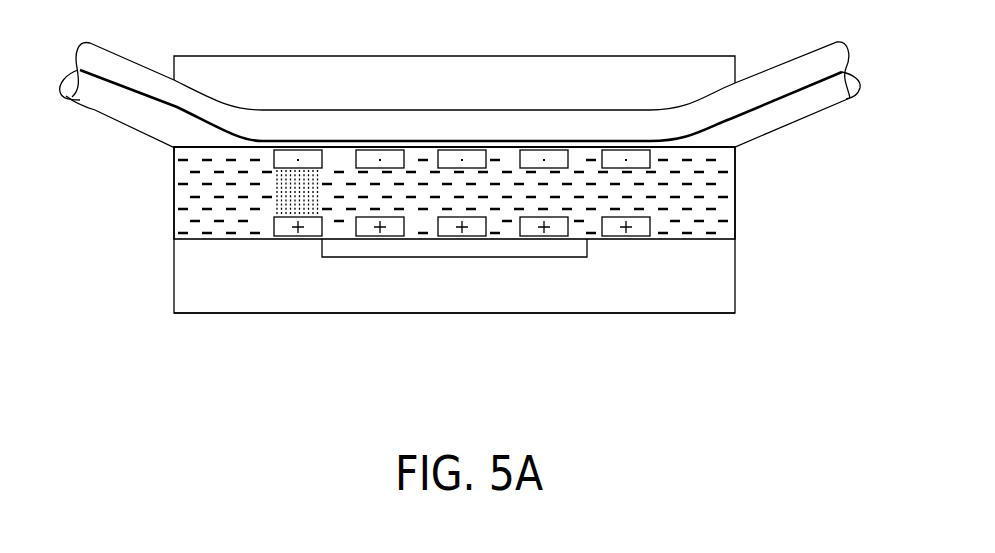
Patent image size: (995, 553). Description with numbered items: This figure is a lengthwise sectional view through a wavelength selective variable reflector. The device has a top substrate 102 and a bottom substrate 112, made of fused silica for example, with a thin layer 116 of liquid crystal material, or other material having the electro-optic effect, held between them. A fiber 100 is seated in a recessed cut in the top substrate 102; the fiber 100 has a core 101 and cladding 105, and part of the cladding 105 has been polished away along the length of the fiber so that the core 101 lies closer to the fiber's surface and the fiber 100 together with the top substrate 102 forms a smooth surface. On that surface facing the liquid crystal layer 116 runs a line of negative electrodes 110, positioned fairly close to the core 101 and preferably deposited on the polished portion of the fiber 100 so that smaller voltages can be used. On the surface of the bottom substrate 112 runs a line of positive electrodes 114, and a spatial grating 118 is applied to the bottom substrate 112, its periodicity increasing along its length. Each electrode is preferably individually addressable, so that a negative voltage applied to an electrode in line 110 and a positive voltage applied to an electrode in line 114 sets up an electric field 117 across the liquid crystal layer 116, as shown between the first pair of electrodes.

The fiber 100 is at (828, 105).
The core 101 is at (783, 95).
The top substrate 102 is at (282, 312).
The cladding 105 is at (767, 123).
The negative electrodes 110 is at (608, 153).
The bottom substrate 112 is at (722, 278).
The positive electrodes 114 is at (607, 225).
The liquid crystal layer 116 is at (730, 213).
The electric field 117 is at (283, 187).
The spatial grating 118 is at (573, 257).